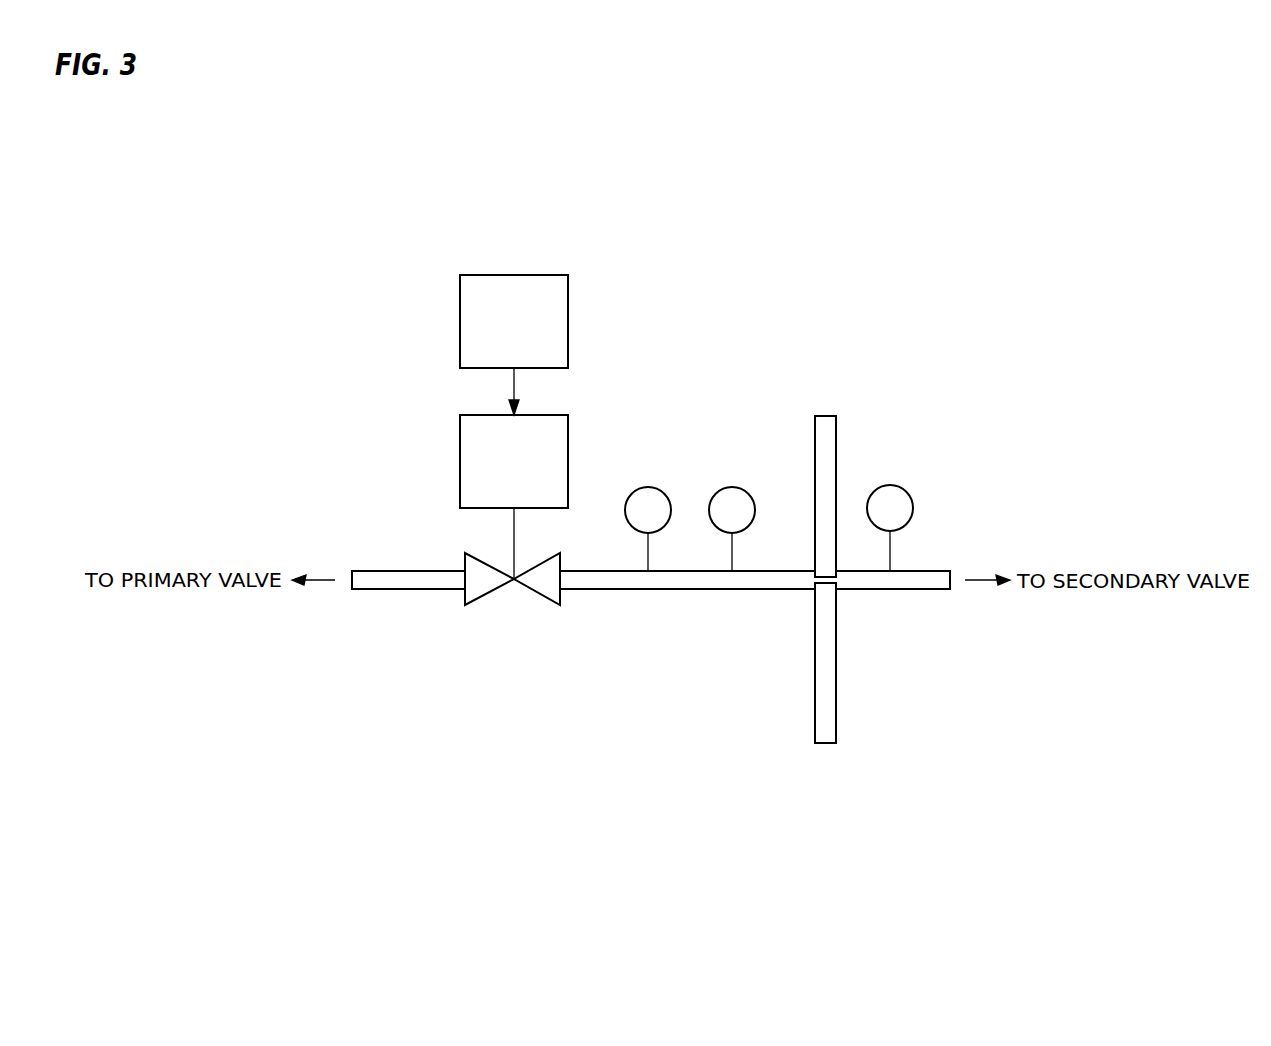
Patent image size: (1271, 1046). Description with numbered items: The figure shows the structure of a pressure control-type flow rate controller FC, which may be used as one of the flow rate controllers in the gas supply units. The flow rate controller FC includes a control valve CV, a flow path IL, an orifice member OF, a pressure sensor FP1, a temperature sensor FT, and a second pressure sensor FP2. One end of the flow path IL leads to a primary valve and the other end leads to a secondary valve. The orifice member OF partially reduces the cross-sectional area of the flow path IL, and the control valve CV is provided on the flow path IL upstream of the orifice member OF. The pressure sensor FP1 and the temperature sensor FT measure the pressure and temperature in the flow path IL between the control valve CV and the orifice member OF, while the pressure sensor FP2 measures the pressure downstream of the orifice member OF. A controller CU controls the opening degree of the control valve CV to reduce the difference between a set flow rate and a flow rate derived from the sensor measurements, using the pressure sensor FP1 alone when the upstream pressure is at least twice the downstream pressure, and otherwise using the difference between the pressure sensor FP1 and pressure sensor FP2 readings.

The flow rate controller FC is at (948, 274).
The controller CU is at (568, 318).
The control valve CV is at (542, 598).
The flow path IL is at (693, 589).
The orifice member OF is at (836, 432).
The pressure sensor FP1 is at (645, 487).
The temperature sensor FT is at (731, 487).
The pressure sensor FP2 is at (910, 492).